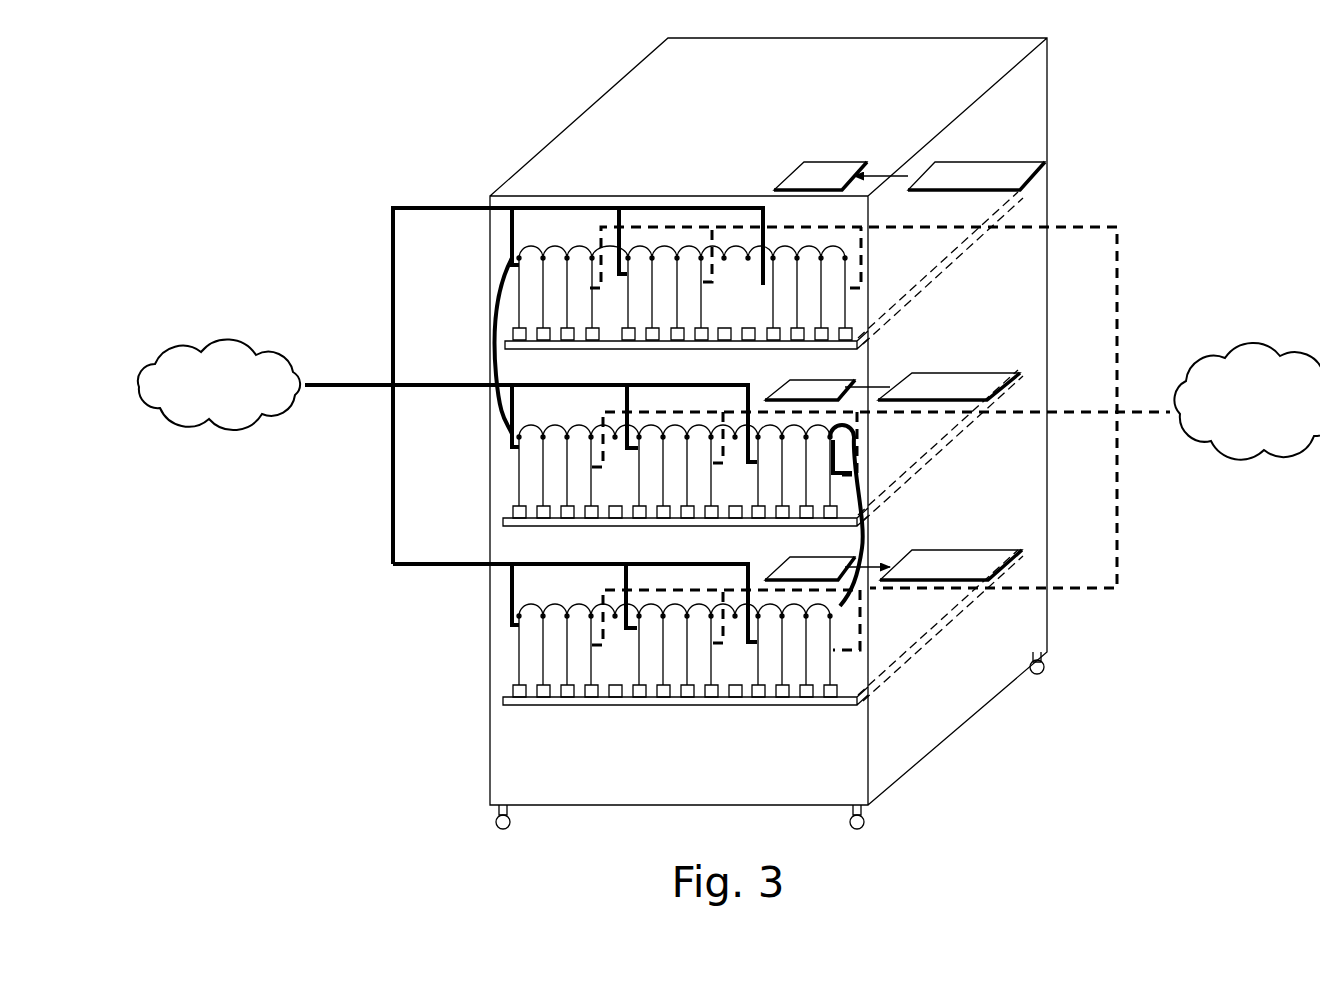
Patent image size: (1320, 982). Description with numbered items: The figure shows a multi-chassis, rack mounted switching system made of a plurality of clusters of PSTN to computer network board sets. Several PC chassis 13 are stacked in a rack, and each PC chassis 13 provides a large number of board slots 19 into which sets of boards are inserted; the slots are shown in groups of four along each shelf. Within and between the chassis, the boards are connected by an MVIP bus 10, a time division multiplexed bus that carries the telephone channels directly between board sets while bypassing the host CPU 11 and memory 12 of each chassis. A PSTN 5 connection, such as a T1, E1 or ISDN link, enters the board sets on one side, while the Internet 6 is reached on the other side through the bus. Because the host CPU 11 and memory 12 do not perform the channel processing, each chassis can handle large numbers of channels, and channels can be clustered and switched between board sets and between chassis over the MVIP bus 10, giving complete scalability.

The PSTN 5 is at (287, 384).
The Internet 6 is at (1247, 401).
The MVIP bus 10 is at (538, 597).
The host CPU 11 is at (839, 338).
The memory 12 is at (880, 425).
The PC chassis 13 is at (1026, 200).
The board slots 19 is at (613, 712).